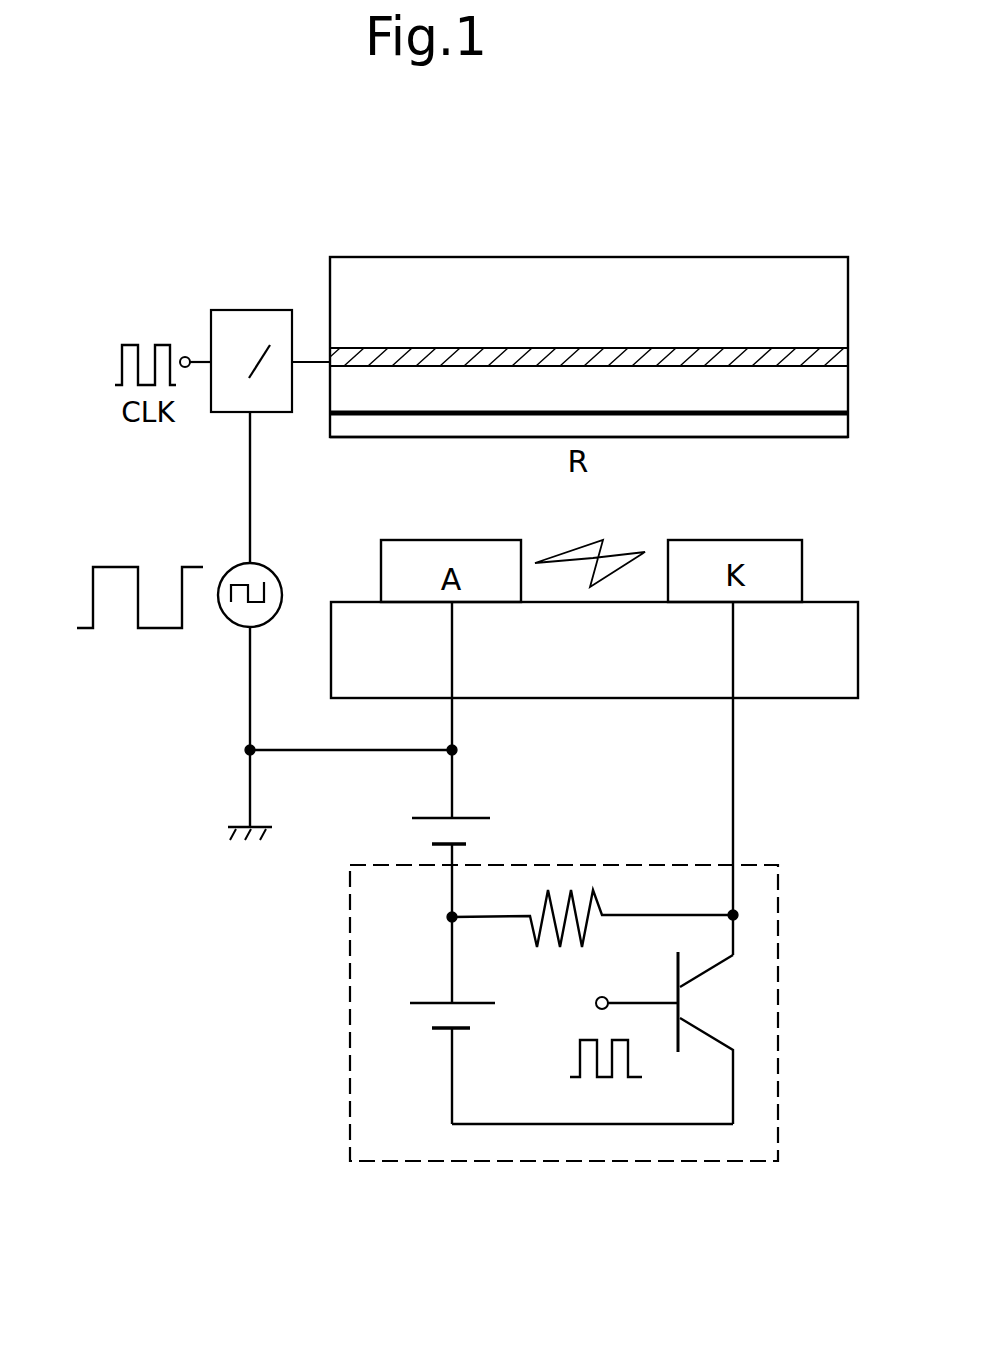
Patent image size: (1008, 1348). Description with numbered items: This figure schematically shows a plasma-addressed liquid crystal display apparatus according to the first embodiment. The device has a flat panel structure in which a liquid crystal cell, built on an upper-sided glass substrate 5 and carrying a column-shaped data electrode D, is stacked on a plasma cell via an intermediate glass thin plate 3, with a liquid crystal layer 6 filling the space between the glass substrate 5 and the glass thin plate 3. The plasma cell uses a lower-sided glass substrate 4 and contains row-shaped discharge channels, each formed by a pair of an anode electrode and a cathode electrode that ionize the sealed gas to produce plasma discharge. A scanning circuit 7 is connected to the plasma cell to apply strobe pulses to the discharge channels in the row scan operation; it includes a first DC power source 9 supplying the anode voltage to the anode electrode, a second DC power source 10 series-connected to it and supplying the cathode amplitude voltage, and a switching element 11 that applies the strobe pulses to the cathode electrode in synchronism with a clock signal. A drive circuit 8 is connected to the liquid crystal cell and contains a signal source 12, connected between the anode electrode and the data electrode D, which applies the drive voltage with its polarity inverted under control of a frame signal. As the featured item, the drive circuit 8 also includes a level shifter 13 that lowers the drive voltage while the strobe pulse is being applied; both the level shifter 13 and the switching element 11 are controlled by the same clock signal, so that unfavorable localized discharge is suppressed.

The glass thin plate 3 is at (838, 432).
The glass substrate 4 is at (788, 688).
The glass substrate 5 is at (629, 265).
The liquid crystal layer 6 is at (843, 399).
The scanning circuit 7 is at (350, 1032).
The drive circuit 8 is at (185, 640).
The first DC power source 9 is at (474, 805).
The second DC power source 10 is at (481, 1018).
The switching element 11 is at (713, 1003).
The signal source 12 is at (270, 618).
The level shifter 13 is at (237, 310).
The data electrode D is at (850, 354).